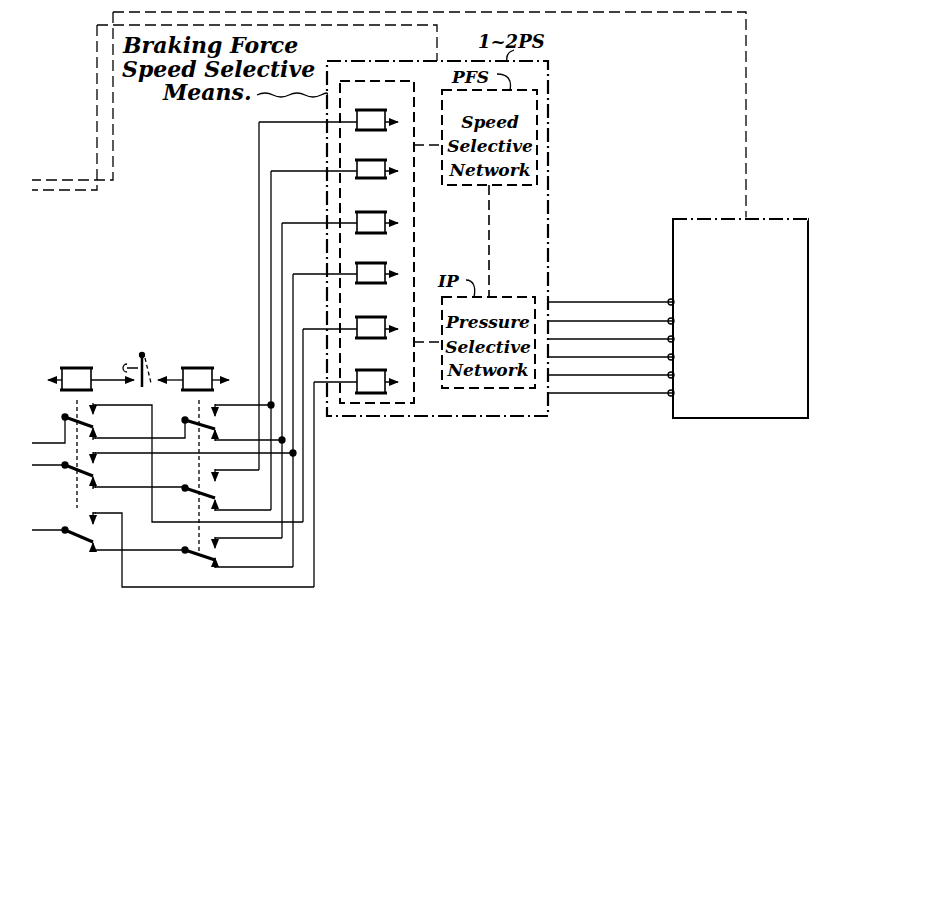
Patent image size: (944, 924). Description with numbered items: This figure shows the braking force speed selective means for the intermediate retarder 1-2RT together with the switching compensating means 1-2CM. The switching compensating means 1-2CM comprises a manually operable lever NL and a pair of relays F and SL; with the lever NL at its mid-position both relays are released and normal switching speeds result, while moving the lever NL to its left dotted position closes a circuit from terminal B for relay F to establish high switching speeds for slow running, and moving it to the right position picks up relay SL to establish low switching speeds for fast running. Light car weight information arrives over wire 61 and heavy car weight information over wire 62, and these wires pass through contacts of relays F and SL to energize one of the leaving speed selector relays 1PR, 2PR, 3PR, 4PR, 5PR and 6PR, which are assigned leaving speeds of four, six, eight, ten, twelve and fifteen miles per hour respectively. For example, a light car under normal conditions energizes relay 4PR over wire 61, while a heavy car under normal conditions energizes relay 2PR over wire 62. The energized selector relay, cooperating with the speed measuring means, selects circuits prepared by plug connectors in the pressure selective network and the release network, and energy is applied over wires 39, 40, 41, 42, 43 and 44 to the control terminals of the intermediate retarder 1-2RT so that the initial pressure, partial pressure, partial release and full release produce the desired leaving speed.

The wire 39 is at (670, 302).
The wire 40 is at (670, 321).
The wire 41 is at (670, 339).
The wire 42 is at (670, 357).
The wire 43 is at (670, 375).
The wire 44 is at (670, 393).
The wire 61 is at (64, 531).
The wire 62 is at (64, 467).
The leaving speed selector relay 1PR is at (334, 279).
The leaving speed selector relay 2PR is at (339, 323).
The leaving speed selector relay 3PR is at (345, 364).
The leaving speed selector relay 4PR is at (350, 405).
The leaving speed selector relay 5PR is at (354, 408).
The leaving speed selector relay 6PR is at (359, 468).
The relay F is at (84, 374).
The manually operable lever NL is at (130, 364).
The positive terminal B is at (142, 355).
The relay SL is at (202, 370).
The switching compensating means 1-2CM is at (175, 298).
The intermediate retarder 1-2RT is at (682, 219).